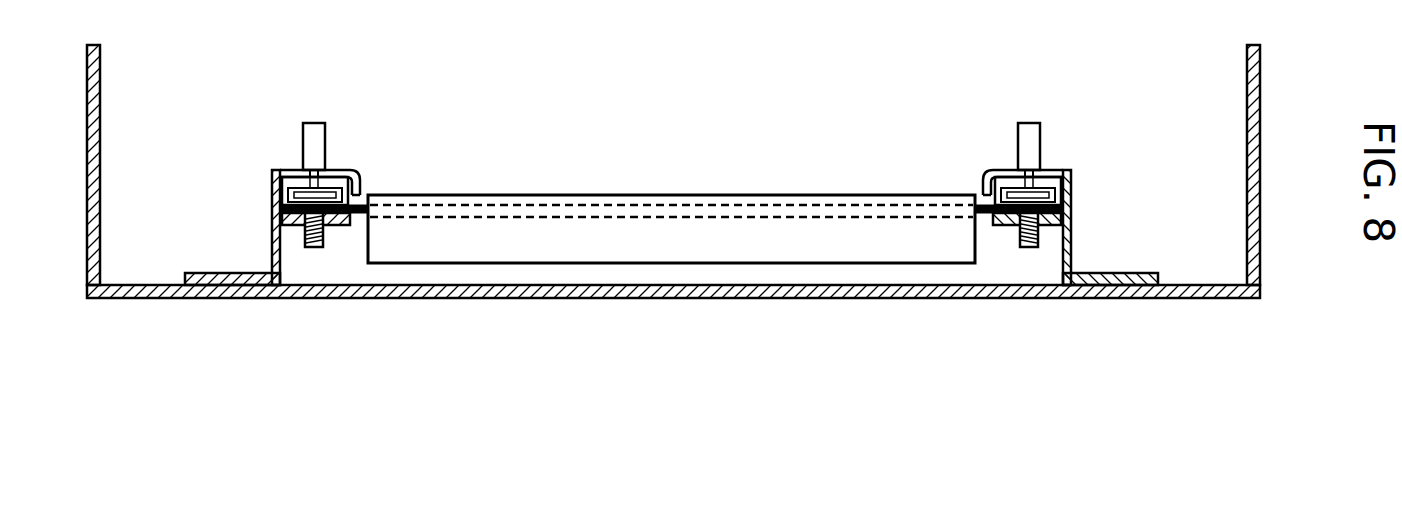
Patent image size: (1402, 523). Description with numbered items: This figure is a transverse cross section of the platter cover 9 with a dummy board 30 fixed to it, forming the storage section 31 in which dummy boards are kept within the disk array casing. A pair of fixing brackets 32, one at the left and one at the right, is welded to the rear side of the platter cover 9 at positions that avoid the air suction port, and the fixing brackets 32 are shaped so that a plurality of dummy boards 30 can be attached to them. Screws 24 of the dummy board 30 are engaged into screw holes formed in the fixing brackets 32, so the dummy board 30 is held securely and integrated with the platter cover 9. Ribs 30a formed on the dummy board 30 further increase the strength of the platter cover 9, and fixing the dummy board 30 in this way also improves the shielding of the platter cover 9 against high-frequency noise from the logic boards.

The platter cover 9 is at (667, 300).
The screw 24 is at (315, 123).
The dummy board 30 is at (730, 193).
The rib 30a is at (653, 237).
The storage section 31 is at (519, 155).
The fixing bracket 32 is at (270, 244).